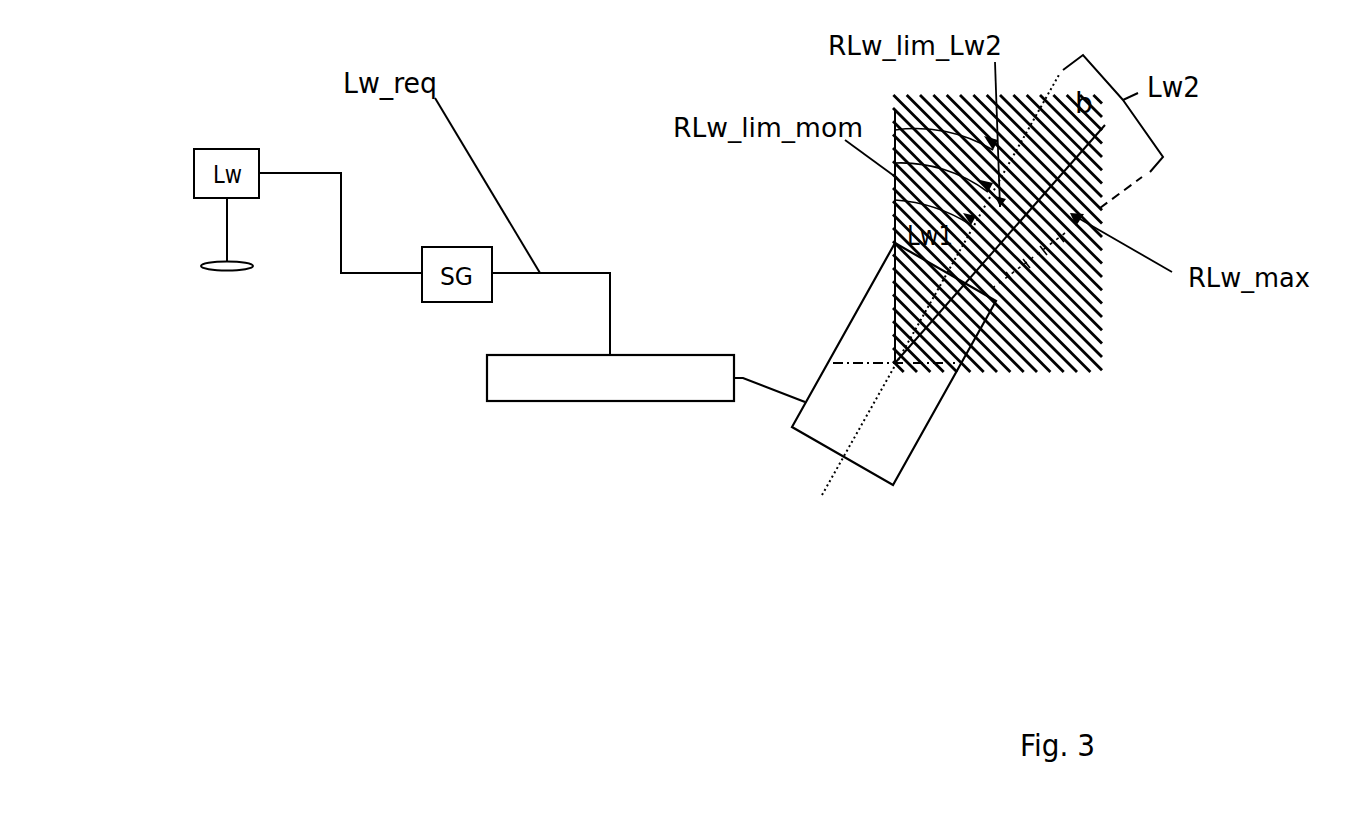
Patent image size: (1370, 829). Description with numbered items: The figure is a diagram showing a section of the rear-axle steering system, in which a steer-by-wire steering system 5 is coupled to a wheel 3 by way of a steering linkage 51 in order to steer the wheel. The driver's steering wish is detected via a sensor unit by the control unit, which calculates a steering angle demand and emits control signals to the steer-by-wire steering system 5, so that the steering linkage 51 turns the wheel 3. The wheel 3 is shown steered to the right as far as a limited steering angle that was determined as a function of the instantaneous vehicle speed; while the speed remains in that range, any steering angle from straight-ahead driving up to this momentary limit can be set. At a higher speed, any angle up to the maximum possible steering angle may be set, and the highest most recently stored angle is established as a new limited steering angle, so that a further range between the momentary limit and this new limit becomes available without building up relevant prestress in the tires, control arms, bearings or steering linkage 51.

The rear wheel 3 is at (897, 433).
The steer-by-wire steering system 5 is at (513, 388).
The steering linkage 51 is at (775, 390).